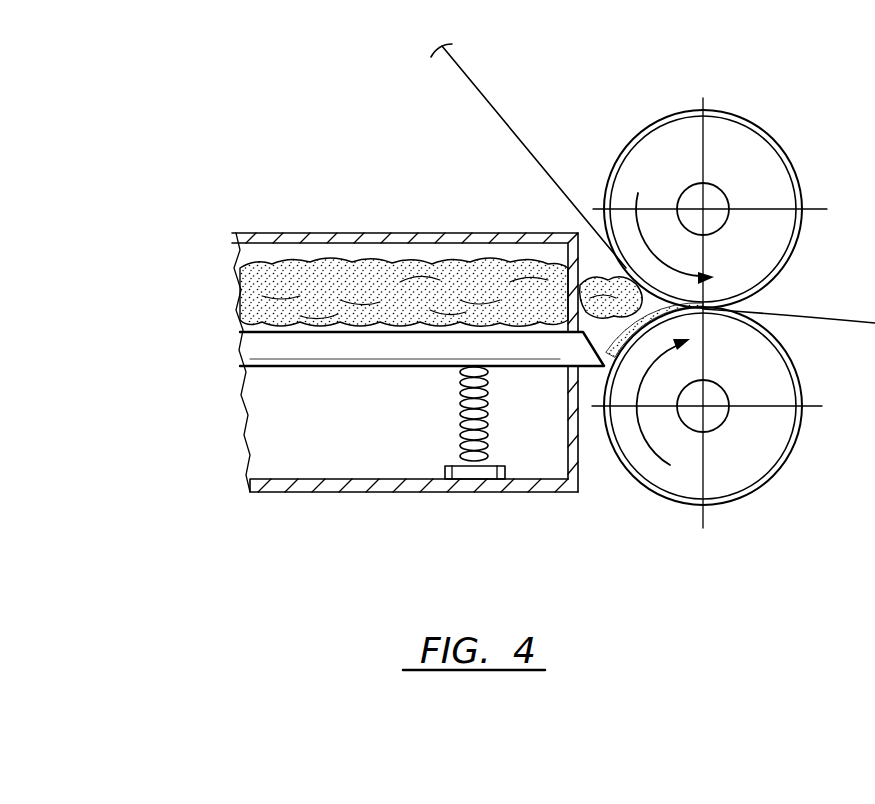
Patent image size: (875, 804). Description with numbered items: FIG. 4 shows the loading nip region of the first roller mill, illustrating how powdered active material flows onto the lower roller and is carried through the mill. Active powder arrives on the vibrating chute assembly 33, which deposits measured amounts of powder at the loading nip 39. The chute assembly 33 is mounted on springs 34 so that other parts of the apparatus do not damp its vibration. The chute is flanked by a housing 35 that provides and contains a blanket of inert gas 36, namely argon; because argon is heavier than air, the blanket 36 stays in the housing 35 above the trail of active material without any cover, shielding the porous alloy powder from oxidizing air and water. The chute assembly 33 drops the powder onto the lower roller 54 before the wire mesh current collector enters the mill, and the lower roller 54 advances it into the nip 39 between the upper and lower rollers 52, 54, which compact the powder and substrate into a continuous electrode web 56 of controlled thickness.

The vibrating chute assembly 33 is at (342, 350).
The springs 34 is at (460, 422).
The housing 35 is at (350, 493).
The blanket of inert gas 36 is at (398, 287).
The loading nip 39 is at (639, 348).
The upper roller 52 is at (770, 187).
The lower roller 54 is at (743, 467).
The continuous electrode web 56 is at (842, 322).